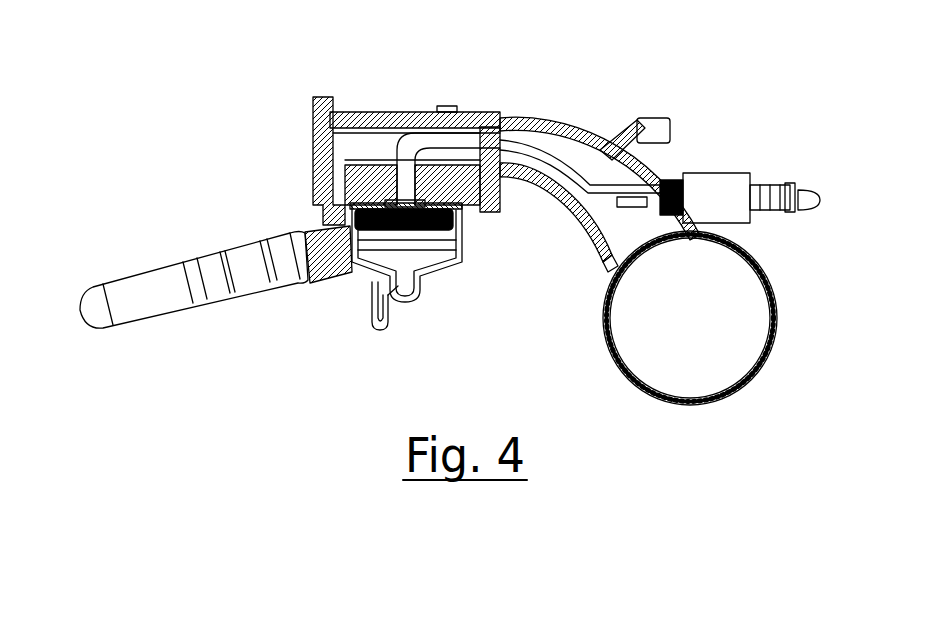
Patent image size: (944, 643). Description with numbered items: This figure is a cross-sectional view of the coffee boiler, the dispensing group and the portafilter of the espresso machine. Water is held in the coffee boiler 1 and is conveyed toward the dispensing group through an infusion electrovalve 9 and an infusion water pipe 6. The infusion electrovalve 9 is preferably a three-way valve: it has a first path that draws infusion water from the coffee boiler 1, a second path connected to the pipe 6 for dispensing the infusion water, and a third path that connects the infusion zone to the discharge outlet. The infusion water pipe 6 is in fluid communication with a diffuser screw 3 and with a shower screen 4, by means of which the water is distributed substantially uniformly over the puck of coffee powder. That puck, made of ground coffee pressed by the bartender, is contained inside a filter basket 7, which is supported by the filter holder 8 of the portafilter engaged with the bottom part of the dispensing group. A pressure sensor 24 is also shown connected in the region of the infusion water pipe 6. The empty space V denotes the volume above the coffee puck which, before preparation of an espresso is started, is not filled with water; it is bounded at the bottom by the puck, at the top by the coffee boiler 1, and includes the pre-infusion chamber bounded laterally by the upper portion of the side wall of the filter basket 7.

The coffee boiler 1 is at (785, 300).
The diffuser screw 3 is at (397, 205).
The shower screen 4 is at (365, 208).
The infusion water pipe 6 is at (560, 165).
The filter basket 7 is at (453, 228).
The filter holder 8 is at (121, 249).
The infusion electrovalve 9 is at (727, 173).
The pressure sensor 24 is at (662, 145).
The empty space above the coffee powder puck V is at (423, 212).